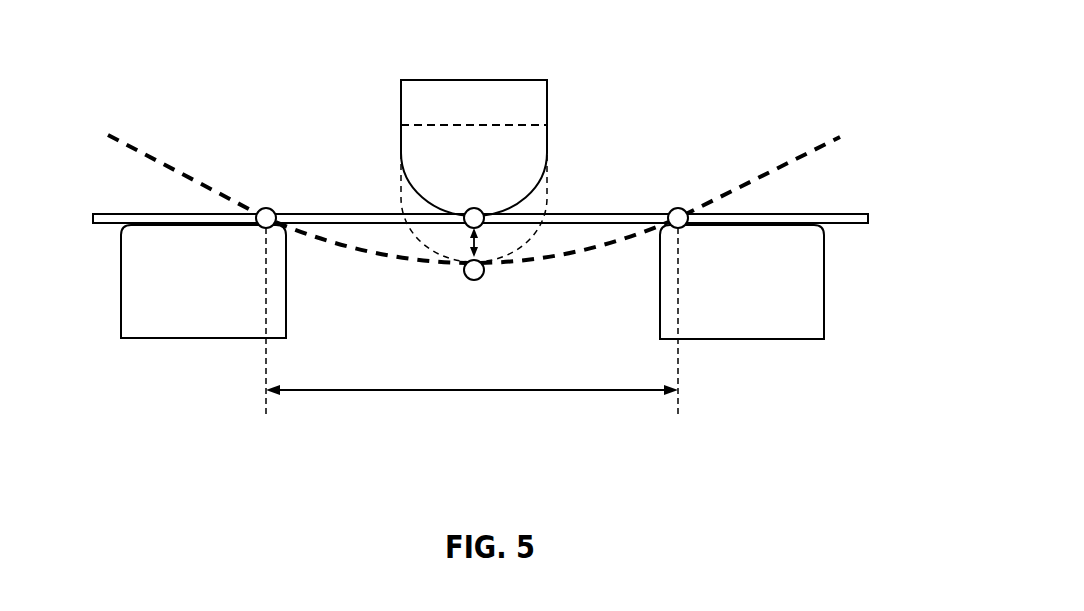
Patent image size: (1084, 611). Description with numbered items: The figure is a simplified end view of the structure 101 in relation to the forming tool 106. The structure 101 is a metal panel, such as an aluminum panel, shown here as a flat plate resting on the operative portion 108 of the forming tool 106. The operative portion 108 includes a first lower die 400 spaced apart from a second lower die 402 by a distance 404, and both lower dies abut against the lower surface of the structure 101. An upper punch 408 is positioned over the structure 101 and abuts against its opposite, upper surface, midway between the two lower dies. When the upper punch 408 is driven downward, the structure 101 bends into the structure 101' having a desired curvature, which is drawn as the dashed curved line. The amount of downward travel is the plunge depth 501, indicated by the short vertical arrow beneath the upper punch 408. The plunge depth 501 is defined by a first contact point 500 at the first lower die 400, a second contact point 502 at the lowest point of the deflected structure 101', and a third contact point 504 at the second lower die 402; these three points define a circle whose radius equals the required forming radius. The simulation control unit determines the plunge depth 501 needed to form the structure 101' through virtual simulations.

The structure 101 is at (504, 172).
The structure having a desired curvature 101' is at (474, 190).
The forming tool 106 is at (425, 66).
The operative portion 108 is at (477, 80).
The first lower die 400 is at (143, 340).
The second lower die 402 is at (755, 340).
The distance 404 is at (477, 390).
The upper punch 408 is at (548, 100).
The first contact point 500 is at (268, 208).
The plunge depth 501 is at (477, 243).
The second contact point 502 is at (475, 280).
The third contact point 504 is at (681, 208).